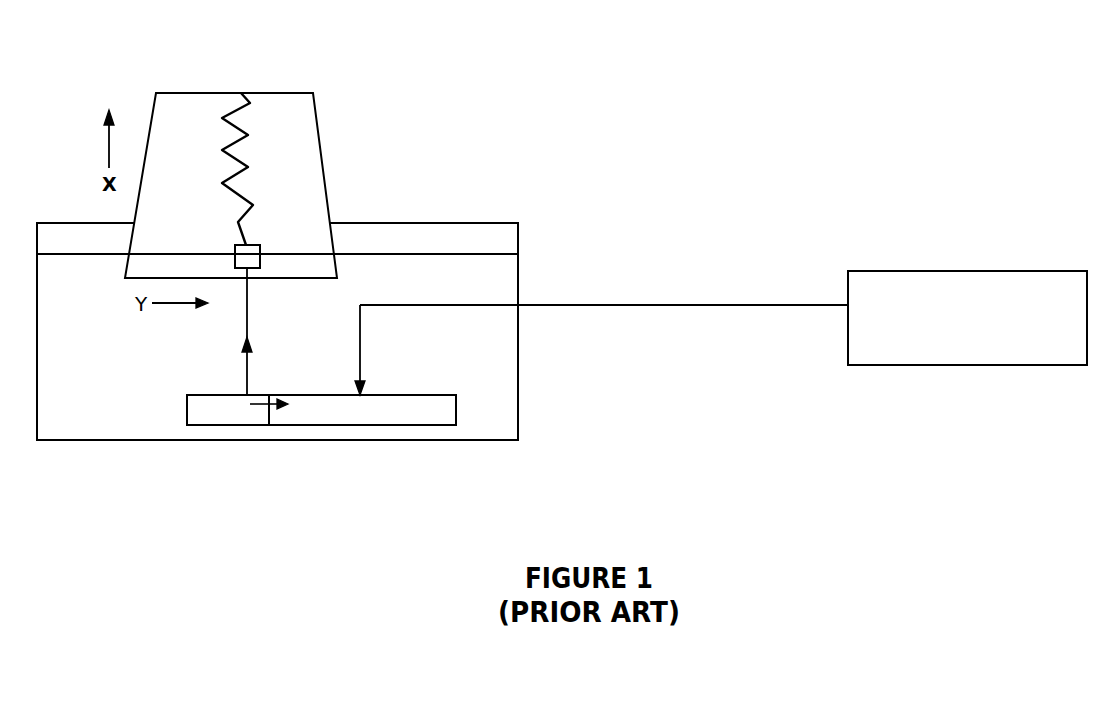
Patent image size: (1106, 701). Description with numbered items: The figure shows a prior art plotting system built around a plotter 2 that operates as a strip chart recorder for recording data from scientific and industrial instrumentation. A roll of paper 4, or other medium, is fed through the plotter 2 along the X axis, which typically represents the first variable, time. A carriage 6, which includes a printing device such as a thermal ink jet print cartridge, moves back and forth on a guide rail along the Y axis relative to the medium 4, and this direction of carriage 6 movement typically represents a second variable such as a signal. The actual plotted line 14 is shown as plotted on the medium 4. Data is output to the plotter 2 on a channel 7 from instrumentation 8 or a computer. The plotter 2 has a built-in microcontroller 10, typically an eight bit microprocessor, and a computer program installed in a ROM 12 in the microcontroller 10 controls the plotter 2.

The plotter 2 is at (47, 440).
The roll of paper 4 is at (322, 147).
The carriage 6 is at (260, 249).
The channel 7 is at (680, 305).
The instrumentation 8 is at (938, 365).
The microcontroller 10 is at (360, 425).
The ROM 12 is at (217, 425).
The plotted line 14 is at (230, 112).